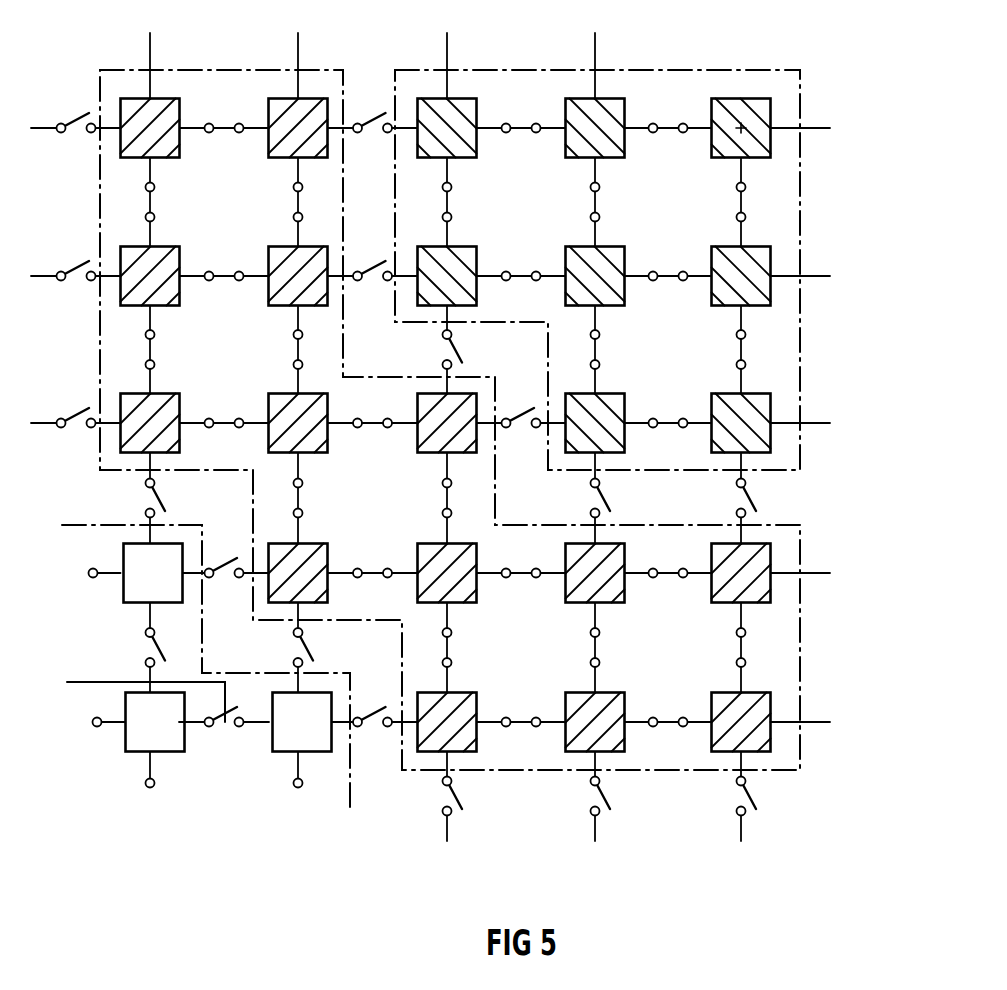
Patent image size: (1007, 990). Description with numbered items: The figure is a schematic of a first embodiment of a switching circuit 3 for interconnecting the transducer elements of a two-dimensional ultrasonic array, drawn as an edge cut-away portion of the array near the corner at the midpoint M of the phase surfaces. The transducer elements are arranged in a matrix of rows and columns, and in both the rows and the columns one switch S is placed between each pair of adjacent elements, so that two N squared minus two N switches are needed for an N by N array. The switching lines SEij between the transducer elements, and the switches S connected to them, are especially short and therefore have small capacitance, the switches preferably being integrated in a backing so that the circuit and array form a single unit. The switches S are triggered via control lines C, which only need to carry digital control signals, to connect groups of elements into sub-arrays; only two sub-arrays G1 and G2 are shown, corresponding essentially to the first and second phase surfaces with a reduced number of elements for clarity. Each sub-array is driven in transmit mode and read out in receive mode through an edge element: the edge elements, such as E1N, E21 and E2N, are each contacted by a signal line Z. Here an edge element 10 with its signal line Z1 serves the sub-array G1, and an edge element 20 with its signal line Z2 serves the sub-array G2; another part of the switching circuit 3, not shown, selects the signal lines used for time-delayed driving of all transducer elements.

The switching circuit 3 is at (449, 428).
The edge element 10 is at (779, 102).
The edge element 20 is at (772, 706).
The midpoint M is at (741, 126).
The signal line Z is at (296, 52).
The signal line Z1 is at (818, 129).
The signal line Z2 is at (815, 727).
The edge transducer element E1N is at (779, 92).
The edge transducer element E2N is at (770, 266).
The edge transducer element E21 is at (266, 148).
The sub-array G1 is at (802, 334).
The sub-array G2 is at (360, 515).
The control line C is at (108, 682).
The switch S is at (233, 727).
The switching line SEij is at (193, 783).